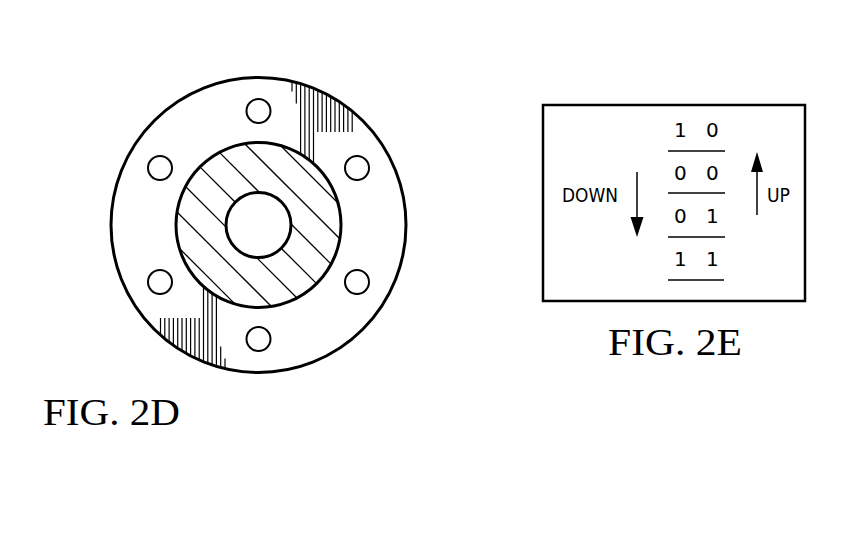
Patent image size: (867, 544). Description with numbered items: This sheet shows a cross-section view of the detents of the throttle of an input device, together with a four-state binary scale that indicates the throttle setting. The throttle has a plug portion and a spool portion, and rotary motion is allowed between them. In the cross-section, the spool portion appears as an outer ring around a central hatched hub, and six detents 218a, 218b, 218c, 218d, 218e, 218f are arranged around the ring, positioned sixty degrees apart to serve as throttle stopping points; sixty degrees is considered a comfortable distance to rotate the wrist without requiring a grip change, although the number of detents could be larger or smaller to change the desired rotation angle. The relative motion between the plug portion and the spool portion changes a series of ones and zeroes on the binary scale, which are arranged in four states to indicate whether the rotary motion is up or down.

The detent 218a is at (257, 116).
The detent 218b is at (350, 165).
The detent 218c is at (350, 278).
The detent 218d is at (253, 331).
The detent 218e is at (158, 283).
The detent 218f is at (163, 165).